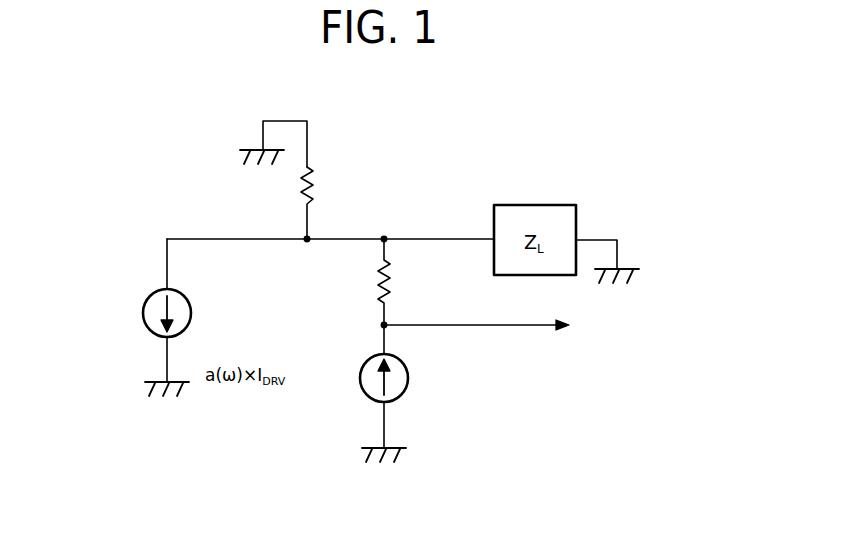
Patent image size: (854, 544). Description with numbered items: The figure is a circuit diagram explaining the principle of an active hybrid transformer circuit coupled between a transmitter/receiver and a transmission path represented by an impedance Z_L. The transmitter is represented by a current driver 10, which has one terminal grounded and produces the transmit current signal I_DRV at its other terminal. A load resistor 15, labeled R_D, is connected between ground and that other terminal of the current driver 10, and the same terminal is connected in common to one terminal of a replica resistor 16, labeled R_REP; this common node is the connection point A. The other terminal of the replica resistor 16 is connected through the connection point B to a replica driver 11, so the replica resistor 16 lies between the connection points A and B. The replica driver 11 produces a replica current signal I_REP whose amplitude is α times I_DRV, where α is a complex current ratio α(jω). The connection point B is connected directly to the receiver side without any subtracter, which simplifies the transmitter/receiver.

The current driver 10 is at (191, 309).
The replica driver 11 is at (365, 388).
The load resistor 15 is at (300, 188).
The replica resistor 16 is at (372, 282).
The connection point A is at (384, 239).
The connection point B is at (380, 325).